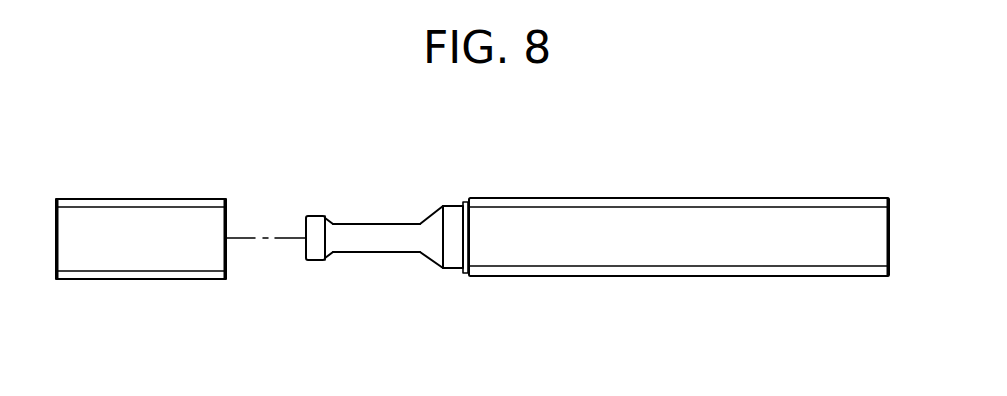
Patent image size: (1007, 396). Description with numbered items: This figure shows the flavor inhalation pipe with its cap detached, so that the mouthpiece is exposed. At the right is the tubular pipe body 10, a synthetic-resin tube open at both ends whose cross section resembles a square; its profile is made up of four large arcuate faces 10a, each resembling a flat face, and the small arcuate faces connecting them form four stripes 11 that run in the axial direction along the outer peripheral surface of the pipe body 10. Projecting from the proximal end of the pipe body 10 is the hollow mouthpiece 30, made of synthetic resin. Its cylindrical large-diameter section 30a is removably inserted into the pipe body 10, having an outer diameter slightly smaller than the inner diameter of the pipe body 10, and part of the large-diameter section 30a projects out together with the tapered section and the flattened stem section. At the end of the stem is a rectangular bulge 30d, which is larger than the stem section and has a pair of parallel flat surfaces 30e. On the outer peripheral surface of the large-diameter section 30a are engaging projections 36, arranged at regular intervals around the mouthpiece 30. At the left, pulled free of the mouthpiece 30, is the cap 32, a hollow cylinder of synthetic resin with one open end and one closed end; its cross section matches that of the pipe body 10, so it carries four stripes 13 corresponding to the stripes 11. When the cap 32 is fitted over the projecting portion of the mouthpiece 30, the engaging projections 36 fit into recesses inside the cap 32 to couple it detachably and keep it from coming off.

The pipe body 10 is at (683, 197).
The large arcuate face 10a is at (872, 217).
The stripe 11 is at (770, 207).
The stripe 13 is at (188, 206).
The mouthpiece 30 is at (358, 239).
The large-diameter section 30a is at (453, 244).
The bulge 30d is at (319, 262).
The flat surface 30e is at (312, 248).
The cap 32 is at (132, 198).
The engaging projection 36 is at (457, 205).